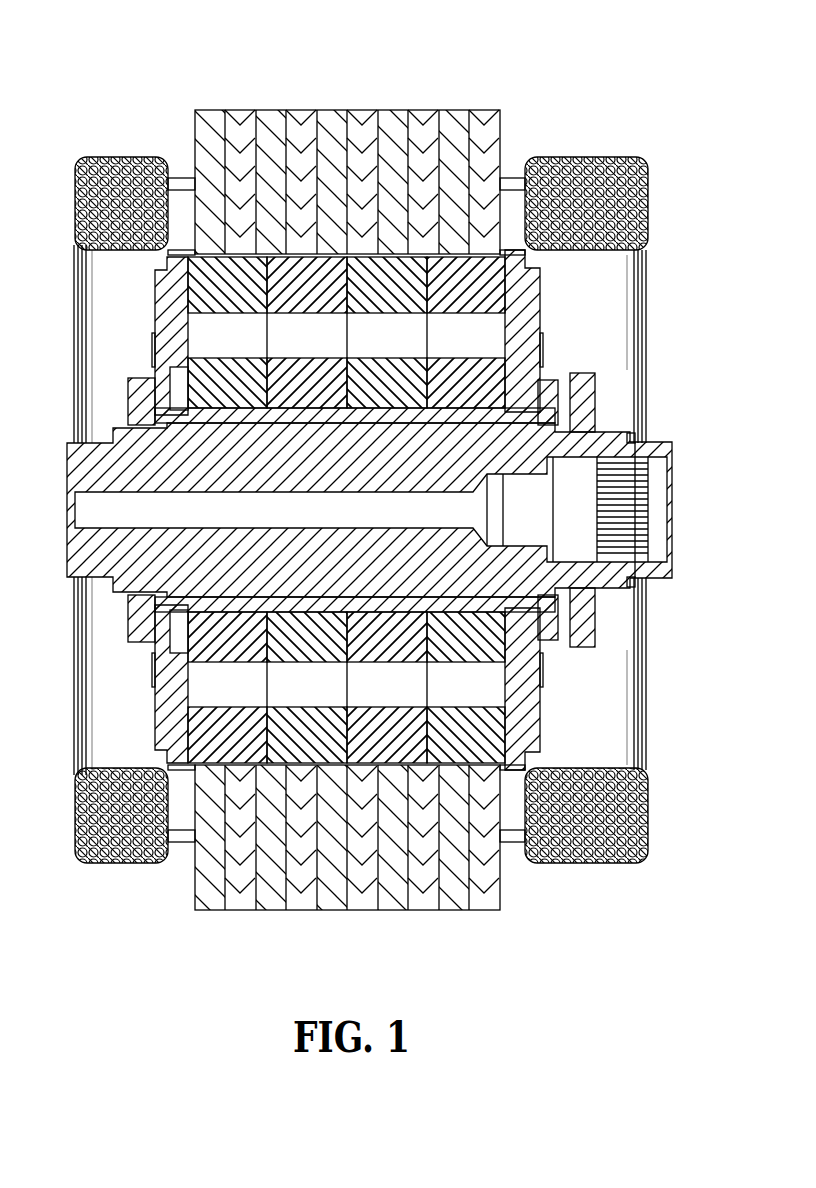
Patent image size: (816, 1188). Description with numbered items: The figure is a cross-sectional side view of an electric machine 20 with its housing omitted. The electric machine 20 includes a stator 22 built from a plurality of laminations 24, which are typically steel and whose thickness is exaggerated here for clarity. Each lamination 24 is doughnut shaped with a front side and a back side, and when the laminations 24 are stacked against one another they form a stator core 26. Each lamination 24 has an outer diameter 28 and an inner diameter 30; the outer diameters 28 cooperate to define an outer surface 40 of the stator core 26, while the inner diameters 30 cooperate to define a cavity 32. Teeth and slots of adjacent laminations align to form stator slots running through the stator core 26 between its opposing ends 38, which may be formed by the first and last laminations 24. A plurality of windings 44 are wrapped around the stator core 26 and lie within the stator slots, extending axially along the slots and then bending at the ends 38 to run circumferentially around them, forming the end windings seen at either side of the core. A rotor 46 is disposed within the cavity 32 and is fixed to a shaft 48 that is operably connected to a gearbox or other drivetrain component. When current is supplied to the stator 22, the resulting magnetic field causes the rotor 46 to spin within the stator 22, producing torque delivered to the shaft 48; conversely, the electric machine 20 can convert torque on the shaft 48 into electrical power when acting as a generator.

The electric machine 20 is at (150, 68).
The stator 22 is at (482, 110).
The laminations 24 is at (205, 908).
The stator core 26 is at (455, 910).
The outer diameter 28 is at (272, 910).
The inner diameter 30 is at (172, 283).
The cavity 32 is at (138, 657).
The ends 38 is at (503, 143).
The outer surface 40 is at (345, 110).
The windings 44 is at (640, 160).
The rotor 46 is at (463, 282).
The shaft 48 is at (657, 442).